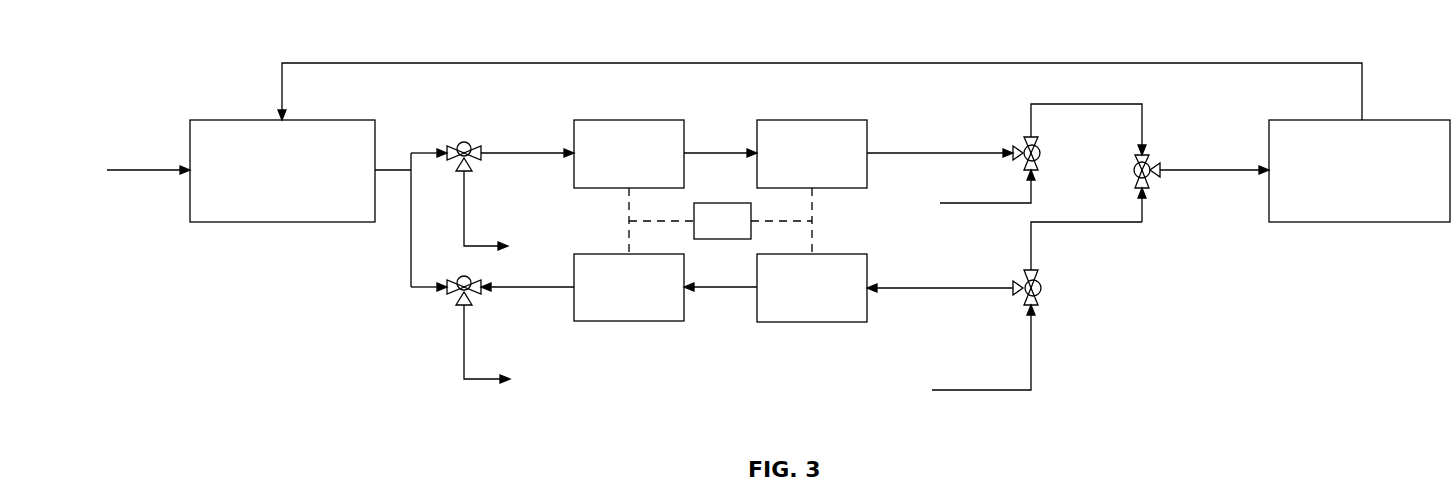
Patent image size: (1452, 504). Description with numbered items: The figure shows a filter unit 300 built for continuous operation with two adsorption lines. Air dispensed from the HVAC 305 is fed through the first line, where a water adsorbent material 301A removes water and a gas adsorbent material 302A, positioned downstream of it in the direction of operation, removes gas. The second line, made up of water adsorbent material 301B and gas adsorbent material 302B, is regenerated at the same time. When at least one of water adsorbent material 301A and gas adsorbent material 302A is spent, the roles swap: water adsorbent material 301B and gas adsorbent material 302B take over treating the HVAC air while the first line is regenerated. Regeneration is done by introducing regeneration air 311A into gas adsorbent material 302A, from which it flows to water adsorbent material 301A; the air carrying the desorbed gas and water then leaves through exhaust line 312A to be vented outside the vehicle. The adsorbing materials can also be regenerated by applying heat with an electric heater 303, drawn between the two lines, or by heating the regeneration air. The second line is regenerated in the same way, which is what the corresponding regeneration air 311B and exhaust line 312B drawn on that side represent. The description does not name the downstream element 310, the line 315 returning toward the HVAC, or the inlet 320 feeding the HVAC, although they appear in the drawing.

The filter unit 300 is at (723, 340).
The water adsorbent material 301A is at (629, 154).
The water adsorbent material 301B is at (629, 287).
The gas adsorbent material 302A is at (812, 154).
The gas adsorbent material 302B is at (812, 288).
The electric heater 303 is at (720, 221).
The HVAC 305 is at (282, 171).
The destination unit 310 is at (1359, 171).
The regeneration air 311A is at (963, 203).
The valve B 311B is at (978, 392).
The exhaust line 312A is at (478, 245).
The valve B outlet 312B is at (476, 381).
The recycle line 315 is at (730, 63).
The feed input 320 is at (142, 168).